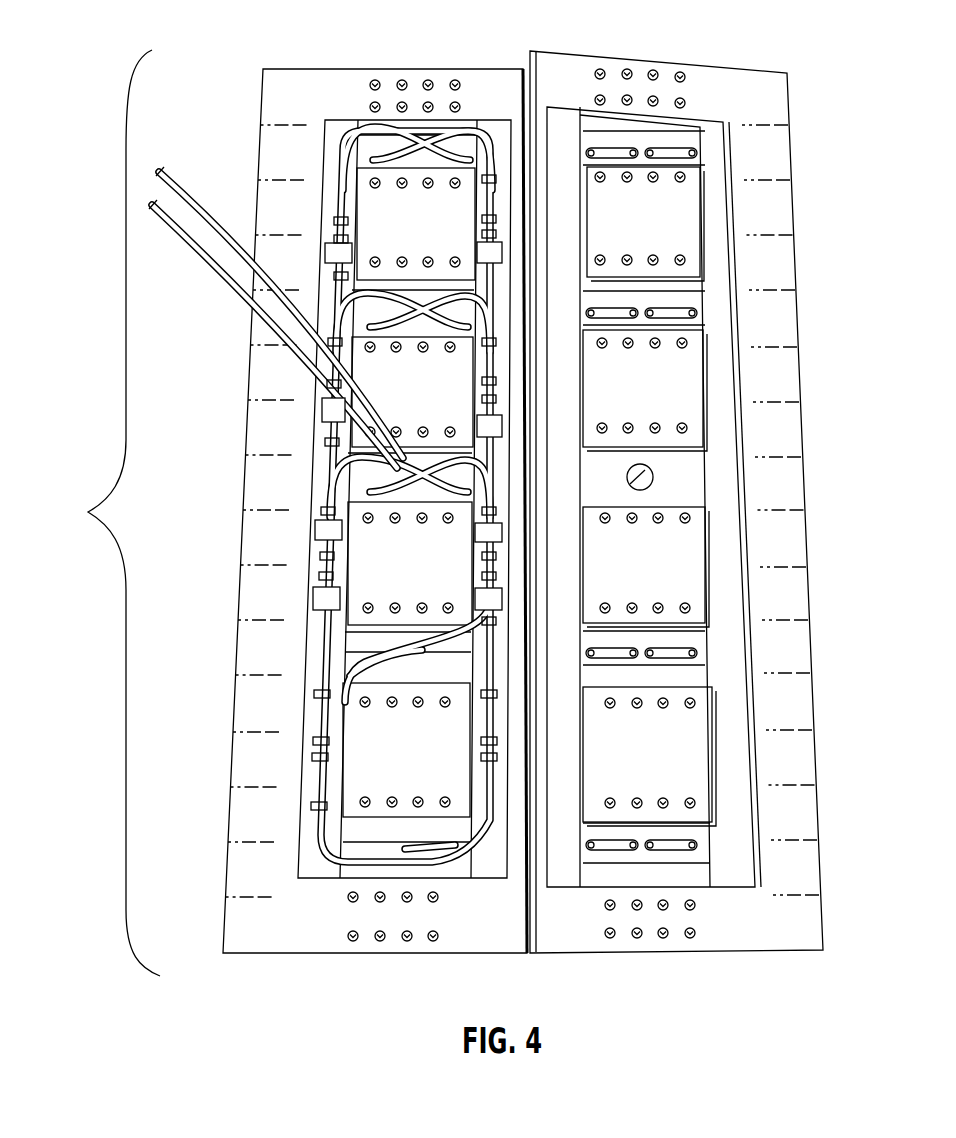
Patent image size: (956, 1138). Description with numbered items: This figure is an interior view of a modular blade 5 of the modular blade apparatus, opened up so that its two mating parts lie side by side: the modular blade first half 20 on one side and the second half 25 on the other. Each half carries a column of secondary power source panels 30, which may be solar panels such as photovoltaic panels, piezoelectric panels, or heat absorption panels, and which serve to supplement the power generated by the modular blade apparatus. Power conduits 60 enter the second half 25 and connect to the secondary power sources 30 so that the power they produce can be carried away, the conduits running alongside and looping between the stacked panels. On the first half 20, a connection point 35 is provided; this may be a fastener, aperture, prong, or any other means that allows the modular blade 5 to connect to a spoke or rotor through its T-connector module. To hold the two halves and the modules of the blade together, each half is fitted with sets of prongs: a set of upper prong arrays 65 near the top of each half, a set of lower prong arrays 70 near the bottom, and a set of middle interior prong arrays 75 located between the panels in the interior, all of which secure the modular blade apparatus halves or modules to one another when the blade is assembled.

The modular blade 5 is at (88, 512).
The first modular blade half 20 is at (753, 105).
The second modular blade half 25 is at (288, 110).
The secondary power source panel 30 is at (367, 745).
The connection point 35 is at (642, 476).
The power conduits 60 is at (340, 190).
The upper prong arrays 65 is at (368, 66).
The lower prong arrays 70 is at (347, 961).
The middle interior prong arrays 75 is at (365, 355).